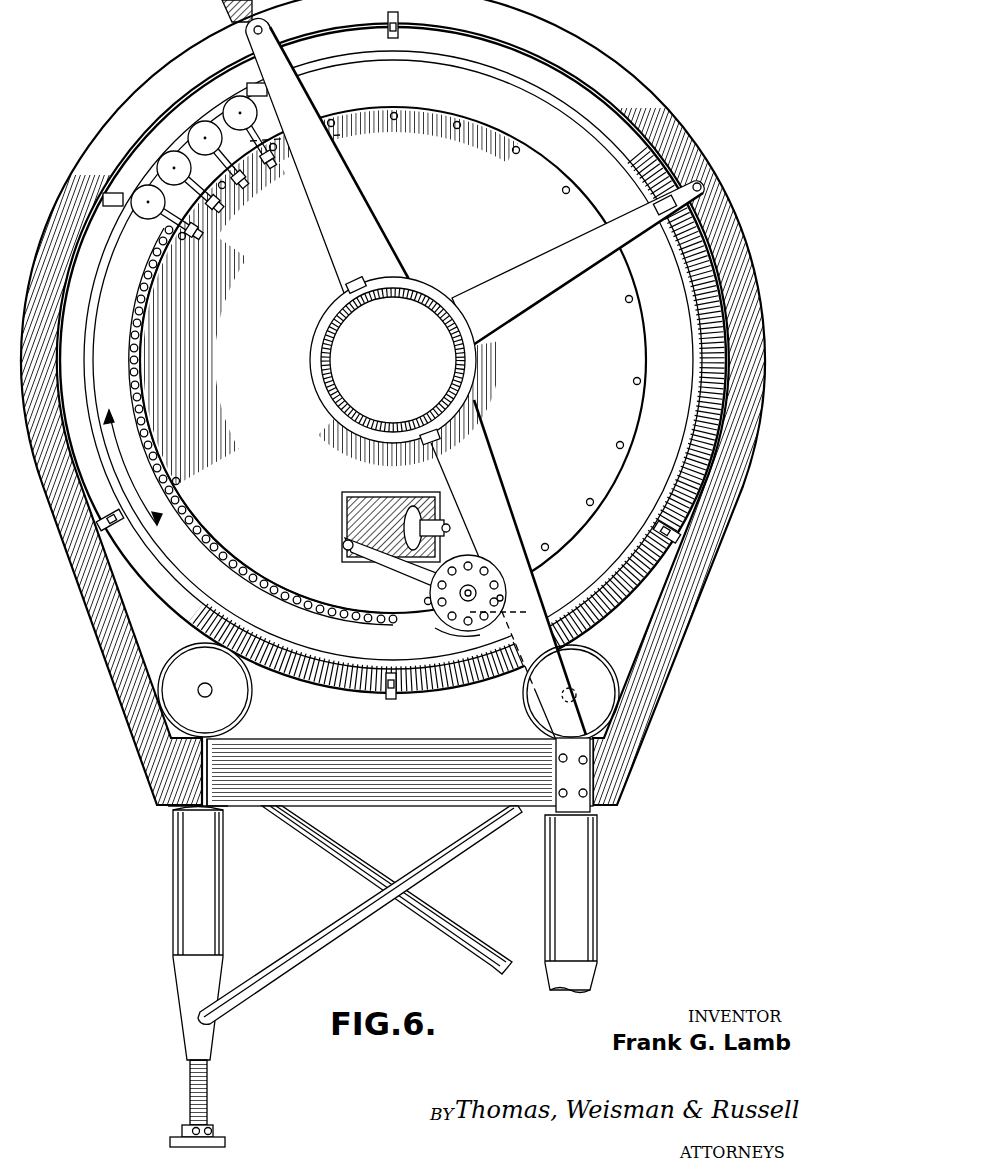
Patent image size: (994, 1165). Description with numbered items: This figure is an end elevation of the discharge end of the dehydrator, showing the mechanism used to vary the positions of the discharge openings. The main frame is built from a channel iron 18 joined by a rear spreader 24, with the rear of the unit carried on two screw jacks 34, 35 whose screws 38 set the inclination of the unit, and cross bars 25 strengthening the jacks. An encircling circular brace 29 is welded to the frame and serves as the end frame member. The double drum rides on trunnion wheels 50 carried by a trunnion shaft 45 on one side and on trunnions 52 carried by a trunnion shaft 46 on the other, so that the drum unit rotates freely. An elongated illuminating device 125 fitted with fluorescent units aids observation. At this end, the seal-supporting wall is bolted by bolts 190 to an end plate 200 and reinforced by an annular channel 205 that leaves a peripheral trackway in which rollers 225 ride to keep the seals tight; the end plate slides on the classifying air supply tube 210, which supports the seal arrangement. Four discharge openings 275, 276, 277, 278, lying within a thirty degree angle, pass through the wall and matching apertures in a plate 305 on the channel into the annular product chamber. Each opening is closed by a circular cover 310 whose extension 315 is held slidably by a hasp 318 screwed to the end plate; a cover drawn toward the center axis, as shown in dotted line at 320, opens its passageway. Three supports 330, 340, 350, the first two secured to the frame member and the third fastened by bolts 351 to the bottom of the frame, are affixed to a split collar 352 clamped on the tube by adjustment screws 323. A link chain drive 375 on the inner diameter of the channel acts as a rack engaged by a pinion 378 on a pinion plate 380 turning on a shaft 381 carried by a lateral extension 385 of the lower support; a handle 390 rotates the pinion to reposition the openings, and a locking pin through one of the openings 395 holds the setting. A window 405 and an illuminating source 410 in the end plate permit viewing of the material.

The channel iron 18 is at (204, 778).
The spreader 24 is at (366, 793).
The cross bars 25 is at (400, 925).
The circular brace 29 is at (620, 82).
The screw jack 34 is at (182, 895).
The screw jack 35 is at (586, 915).
The screws 38 is at (190, 1094).
The trunnion shaft 45 is at (205, 698).
The trunnion shaft 46 is at (578, 695).
The trunnion wheels 50 is at (240, 712).
The trunnions 52 is at (590, 660).
The illuminating devices 125 is at (222, 12).
The bolts 190 is at (628, 303).
The end plate 200 is at (450, 222).
The channel 205 is at (492, 100).
The classifying air supply tube 210 is at (468, 363).
The rollers 225 is at (392, 42).
The discharge opening 275 is at (238, 97).
The discharge opening 276 is at (202, 122).
The discharge opening 277 is at (170, 152).
The discharge opening 278 is at (140, 226).
The plate 305 is at (152, 176).
The circular covers 310 is at (291, 94).
The extension 315 is at (248, 192).
The hasp 318 is at (206, 238).
The withdrawn cover position 320 is at (316, 135).
The adjustment screws 323 is at (345, 287).
The support 330 is at (347, 190).
The support 340 is at (488, 282).
The support 350 is at (502, 489).
The bolts 351 is at (554, 766).
The collar 352 is at (405, 290).
The link chain drive 375 is at (137, 393).
The pinion 378 is at (500, 560).
The pinion plate 380 is at (486, 558).
The shaft 381 is at (450, 628).
The lateral extension 385 is at (492, 676).
The handle 390 is at (393, 568).
The openings 395 is at (520, 602).
The window 405 is at (363, 500).
The illuminating source 410 is at (428, 512).